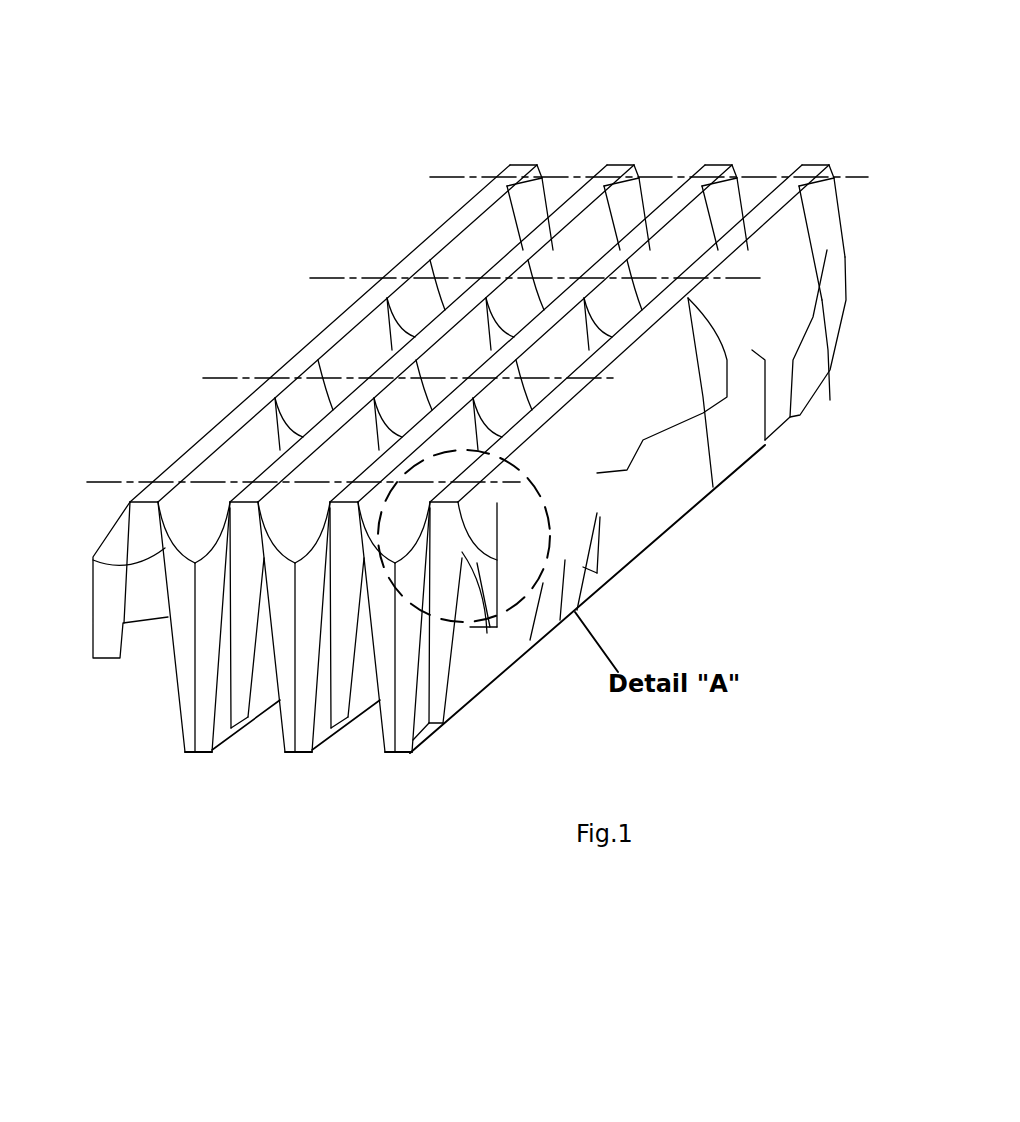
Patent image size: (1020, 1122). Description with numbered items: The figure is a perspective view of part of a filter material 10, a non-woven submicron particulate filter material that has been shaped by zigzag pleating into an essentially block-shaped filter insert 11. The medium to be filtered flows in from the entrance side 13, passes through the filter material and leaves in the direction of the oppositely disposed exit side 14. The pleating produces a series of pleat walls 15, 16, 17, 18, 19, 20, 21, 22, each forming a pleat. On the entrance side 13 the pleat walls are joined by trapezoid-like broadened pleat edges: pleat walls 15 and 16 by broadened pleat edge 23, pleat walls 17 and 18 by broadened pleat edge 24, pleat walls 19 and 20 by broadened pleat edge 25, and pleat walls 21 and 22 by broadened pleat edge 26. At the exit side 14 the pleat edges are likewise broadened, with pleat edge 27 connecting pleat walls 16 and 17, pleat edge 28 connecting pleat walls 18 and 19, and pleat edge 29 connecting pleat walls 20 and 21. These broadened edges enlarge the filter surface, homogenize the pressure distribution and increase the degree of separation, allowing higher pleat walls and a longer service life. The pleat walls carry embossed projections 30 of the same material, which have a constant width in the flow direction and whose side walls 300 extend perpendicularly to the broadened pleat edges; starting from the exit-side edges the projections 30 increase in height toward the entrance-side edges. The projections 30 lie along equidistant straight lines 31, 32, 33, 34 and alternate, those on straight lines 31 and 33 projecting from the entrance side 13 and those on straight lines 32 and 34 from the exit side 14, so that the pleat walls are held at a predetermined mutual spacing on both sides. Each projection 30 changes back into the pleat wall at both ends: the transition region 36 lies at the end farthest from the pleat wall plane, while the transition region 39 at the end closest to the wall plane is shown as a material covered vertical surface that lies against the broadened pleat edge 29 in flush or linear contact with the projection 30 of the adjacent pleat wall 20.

The filter material 10 is at (697, 400).
The filter insert 11 is at (200, 243).
The entrance side 13 is at (437, 95).
The exit side 14 is at (315, 870).
The pleat wall 15 is at (162, 620).
The pleat wall 16 is at (473, 215).
The pleat wall 17 is at (263, 695).
The pleat wall 18 is at (587, 237).
The pleat wall 19 is at (362, 700).
The pleat wall 20 is at (687, 243).
The pleat wall 21 is at (468, 690).
The pleat wall 22 is at (797, 243).
The broadened pleat edge 23 is at (515, 248).
The broadened pleat edge 24 is at (618, 215).
The broadened pleat edge 25 is at (690, 205).
The broadened pleat edge 26 is at (833, 195).
The broadened pleat edge 27 is at (188, 752).
The broadened pleat edge 28 is at (296, 752).
The broadened pleat edge 29 is at (394, 752).
The projection 30 is at (207, 688).
The straight line 31 is at (93, 482).
The straight line 32 is at (220, 378).
The straight line 33 is at (328, 278).
The straight line 34 is at (438, 177).
The transition region 36 is at (190, 520).
The transition region 39 is at (226, 748).
The side wall 300 is at (117, 547).